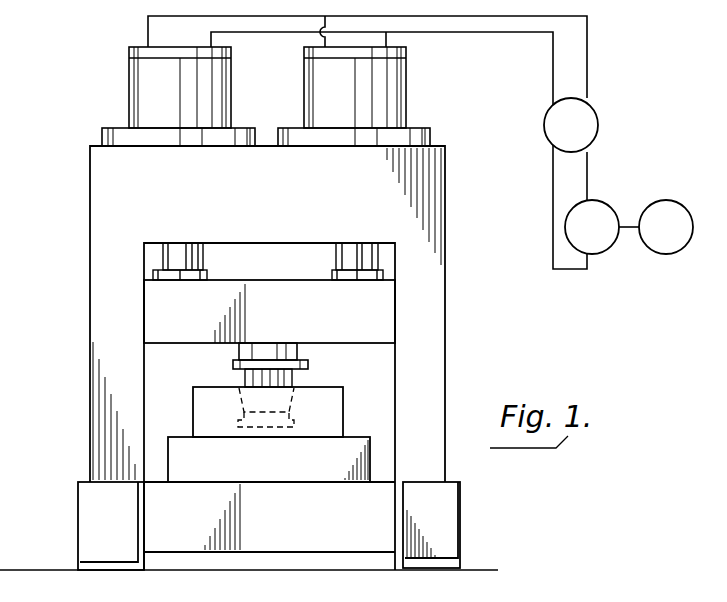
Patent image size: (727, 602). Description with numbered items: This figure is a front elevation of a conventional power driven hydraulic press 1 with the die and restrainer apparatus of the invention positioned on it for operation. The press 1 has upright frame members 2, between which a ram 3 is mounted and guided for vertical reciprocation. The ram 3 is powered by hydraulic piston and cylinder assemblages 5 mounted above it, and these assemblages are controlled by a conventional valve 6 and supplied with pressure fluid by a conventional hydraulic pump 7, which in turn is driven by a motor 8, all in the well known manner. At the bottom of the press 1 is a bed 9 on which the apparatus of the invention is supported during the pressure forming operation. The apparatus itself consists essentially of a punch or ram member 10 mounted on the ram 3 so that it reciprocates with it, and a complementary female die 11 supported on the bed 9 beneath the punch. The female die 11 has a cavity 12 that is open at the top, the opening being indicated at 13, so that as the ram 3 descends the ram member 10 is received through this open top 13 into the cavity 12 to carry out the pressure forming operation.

The hydraulic press 1 is at (445, 302).
The upright frame members 2 is at (112, 335).
The ram 3 is at (167, 311).
The hydraulic piston and cylinder assemblages 5 is at (128, 100).
The valve 6 is at (598, 113).
The hydraulic pump 7 is at (606, 203).
The motor 8 is at (660, 254).
The bed 9 is at (447, 508).
The punch or ram member 10 is at (308, 366).
The female die 11 is at (343, 402).
The cavity 12 is at (280, 427).
The open top 13 is at (240, 385).